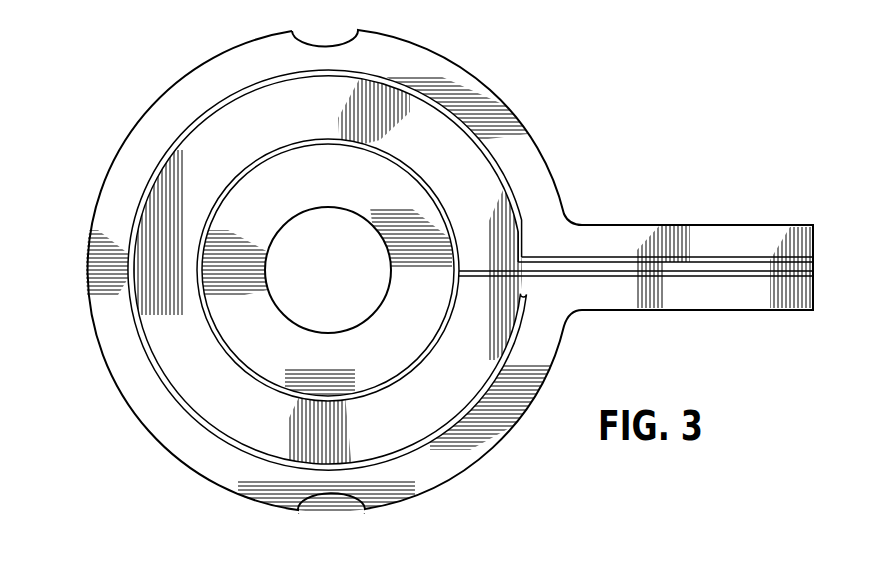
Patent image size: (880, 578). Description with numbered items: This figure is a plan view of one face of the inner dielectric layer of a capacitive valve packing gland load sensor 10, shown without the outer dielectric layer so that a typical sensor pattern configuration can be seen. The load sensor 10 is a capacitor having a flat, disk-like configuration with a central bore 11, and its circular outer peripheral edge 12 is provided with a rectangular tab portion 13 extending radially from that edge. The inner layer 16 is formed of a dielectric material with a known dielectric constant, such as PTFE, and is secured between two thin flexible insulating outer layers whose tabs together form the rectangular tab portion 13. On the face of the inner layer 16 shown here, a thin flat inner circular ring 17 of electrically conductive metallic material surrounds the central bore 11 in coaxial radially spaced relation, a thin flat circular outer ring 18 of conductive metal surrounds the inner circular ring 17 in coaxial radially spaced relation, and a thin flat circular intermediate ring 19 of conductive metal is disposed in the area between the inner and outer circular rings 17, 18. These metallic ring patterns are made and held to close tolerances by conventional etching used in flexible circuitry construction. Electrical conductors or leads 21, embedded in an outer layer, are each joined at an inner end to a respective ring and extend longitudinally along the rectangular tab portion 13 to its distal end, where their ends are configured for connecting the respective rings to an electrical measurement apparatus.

The valve packing gland load sensor 10 is at (436, 280).
The central bore 11 is at (365, 300).
The circular outer peripheral edge 12 is at (148, 102).
The rectangular tab portion 13 is at (703, 305).
The inner layer 16 is at (498, 92).
The inner circular ring 17 is at (273, 373).
The outer circular ring 18 is at (125, 390).
The intermediate ring 19 is at (195, 398).
The electrical conductors or leads 21 is at (705, 260).